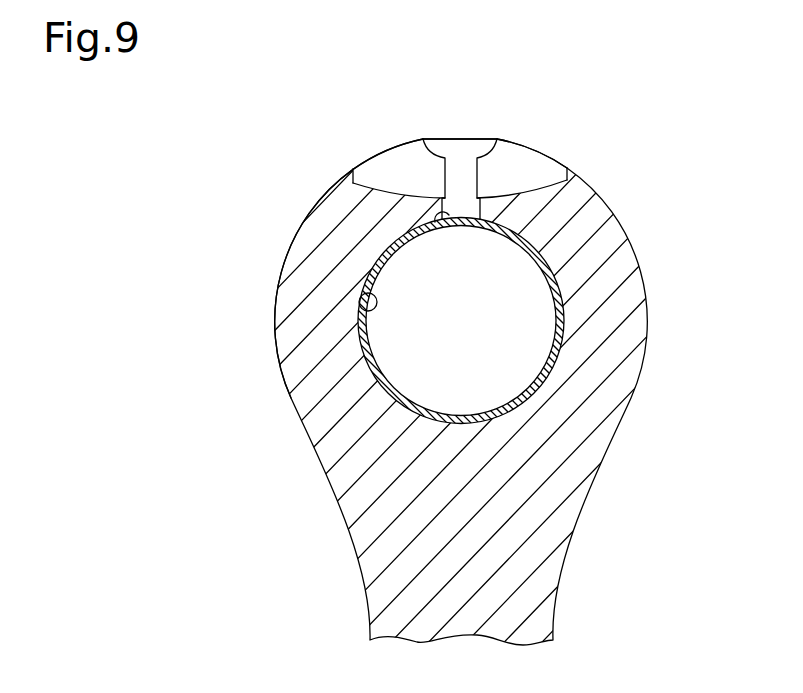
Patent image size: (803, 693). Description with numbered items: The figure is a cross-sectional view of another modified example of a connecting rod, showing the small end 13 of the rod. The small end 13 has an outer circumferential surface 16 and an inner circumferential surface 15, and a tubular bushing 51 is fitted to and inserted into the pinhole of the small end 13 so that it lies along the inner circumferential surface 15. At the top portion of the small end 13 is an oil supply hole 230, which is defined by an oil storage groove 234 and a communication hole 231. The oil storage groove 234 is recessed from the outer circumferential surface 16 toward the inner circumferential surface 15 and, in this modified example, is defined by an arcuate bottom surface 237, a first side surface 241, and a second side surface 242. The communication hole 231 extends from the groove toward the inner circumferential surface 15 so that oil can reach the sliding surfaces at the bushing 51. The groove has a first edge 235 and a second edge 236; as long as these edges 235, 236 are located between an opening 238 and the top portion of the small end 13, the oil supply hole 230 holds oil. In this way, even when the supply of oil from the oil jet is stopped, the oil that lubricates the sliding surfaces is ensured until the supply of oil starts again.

The small end 13 is at (636, 292).
The inner circumferential surface 15 is at (362, 291).
The outer circumferential surface 16 is at (311, 206).
The tubular bushing 51 is at (372, 368).
The oil supply hole 230 is at (457, 133).
The communication hole 231 is at (453, 224).
The oil storage groove 234 is at (408, 157).
The first edge 235 is at (352, 168).
The second edge 236 is at (570, 165).
The arcuate bottom surface 237 is at (513, 192).
The opening 238 is at (477, 200).
The first side surface 241 is at (356, 169).
The second side surface 242 is at (567, 163).